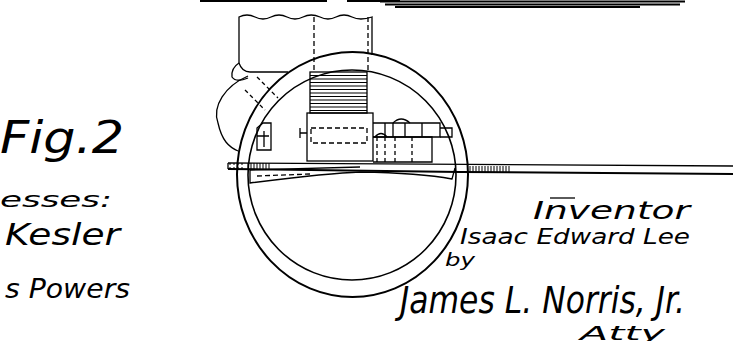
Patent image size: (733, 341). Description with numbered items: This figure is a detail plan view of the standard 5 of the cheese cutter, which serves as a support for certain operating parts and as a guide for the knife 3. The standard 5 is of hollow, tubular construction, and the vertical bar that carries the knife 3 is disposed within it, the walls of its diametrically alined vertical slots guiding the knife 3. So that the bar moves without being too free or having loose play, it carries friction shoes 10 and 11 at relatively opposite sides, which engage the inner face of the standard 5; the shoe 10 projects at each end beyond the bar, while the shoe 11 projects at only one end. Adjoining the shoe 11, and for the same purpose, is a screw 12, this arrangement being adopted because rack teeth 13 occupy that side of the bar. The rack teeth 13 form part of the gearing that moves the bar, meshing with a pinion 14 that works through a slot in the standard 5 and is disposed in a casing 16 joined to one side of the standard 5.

The knife 3 is at (508, 170).
The standard 5 is at (462, 141).
The friction shoe 10 is at (452, 181).
The friction shoe 11 is at (437, 127).
The screw 12 is at (256, 148).
The rack teeth 13 is at (363, 118).
The pinion 14 is at (362, 82).
The casing 16 is at (239, 43).